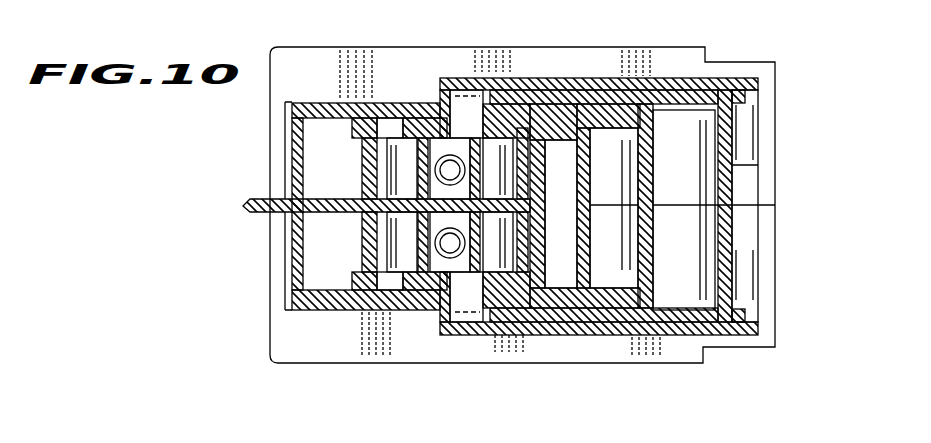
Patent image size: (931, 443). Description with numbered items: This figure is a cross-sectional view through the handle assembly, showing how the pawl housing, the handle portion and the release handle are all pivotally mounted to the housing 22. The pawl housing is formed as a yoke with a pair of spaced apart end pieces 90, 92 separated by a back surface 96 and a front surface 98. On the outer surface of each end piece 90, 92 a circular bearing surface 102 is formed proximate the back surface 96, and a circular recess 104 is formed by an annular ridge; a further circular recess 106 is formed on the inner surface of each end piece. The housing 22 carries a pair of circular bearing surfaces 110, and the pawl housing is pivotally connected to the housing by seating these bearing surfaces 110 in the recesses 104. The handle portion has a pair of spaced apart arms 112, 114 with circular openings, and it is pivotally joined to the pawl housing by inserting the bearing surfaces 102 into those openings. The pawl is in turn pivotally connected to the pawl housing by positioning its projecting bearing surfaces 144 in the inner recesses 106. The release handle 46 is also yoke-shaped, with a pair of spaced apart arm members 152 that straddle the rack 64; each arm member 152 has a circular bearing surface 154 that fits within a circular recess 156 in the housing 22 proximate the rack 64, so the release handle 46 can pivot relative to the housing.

The housing 22 is at (300, 113).
The release handle 46 is at (253, 214).
The rack 64 is at (413, 275).
The end piece 90 is at (601, 320).
The end piece 92 is at (645, 82).
The back surface 96 is at (735, 186).
The front surface 98 is at (648, 168).
The bearing surface 102 is at (710, 95).
The circular recess 104 is at (583, 105).
The circular recess 106 is at (507, 115).
The bearing surface 110 is at (558, 93).
The arm 112 is at (745, 318).
The arm 114 is at (740, 97).
The bearing surface 144 is at (507, 320).
The arm member 152 is at (355, 140).
The bearing surface 154 is at (383, 120).
The circular recess 156 is at (361, 112).